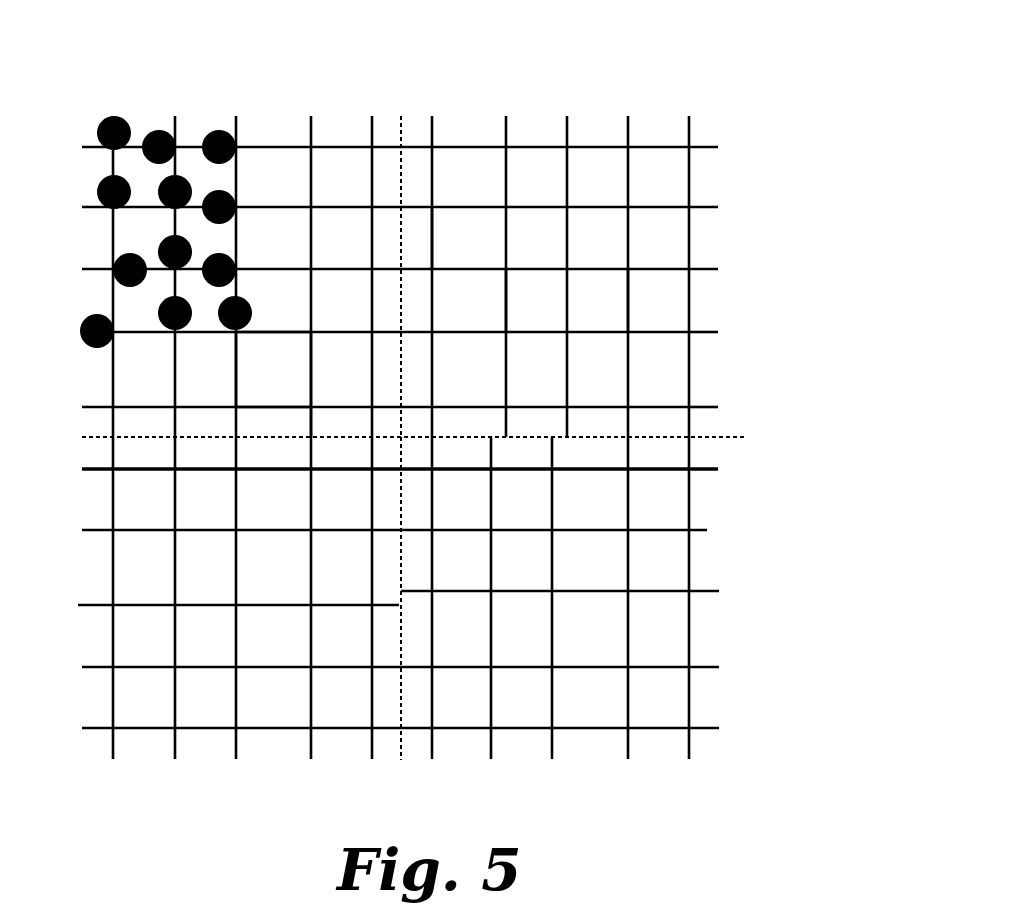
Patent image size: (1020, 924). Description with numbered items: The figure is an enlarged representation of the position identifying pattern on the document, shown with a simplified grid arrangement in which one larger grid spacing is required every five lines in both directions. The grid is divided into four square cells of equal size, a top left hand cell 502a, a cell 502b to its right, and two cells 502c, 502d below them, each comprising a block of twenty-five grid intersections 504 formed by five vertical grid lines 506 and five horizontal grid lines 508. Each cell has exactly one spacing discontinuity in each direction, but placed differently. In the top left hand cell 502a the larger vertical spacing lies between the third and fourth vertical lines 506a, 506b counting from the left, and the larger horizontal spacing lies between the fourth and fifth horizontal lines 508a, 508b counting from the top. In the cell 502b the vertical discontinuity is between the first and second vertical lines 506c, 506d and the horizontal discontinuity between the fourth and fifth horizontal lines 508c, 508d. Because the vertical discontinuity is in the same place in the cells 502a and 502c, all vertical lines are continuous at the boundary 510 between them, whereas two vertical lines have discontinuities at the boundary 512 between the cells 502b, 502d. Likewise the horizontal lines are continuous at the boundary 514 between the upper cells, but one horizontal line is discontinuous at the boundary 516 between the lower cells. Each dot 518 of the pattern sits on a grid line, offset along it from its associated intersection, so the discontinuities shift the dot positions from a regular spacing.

The top left hand cell 502a is at (254, 123).
The cell 502b is at (650, 116).
The cell 502c is at (204, 763).
The cell 502d is at (606, 766).
The grid intersections 504 is at (628, 207).
The vertical grid lines 506 is at (628, 312).
The third vertical line 506a is at (237, 392).
The fourth vertical line 506b is at (312, 400).
The first vertical line 506c is at (433, 260).
The second vertical line 506d is at (503, 285).
The horizontal grid lines 508 is at (667, 530).
The fourth horizontal line 508a is at (268, 330).
The fifth horizontal line 508b is at (278, 408).
The fourth horizontal line 508c is at (702, 332).
The fifth horizontal line 508d is at (700, 407).
The boundary 510 is at (103, 437).
The boundary 512 is at (670, 437).
The boundary 514 is at (403, 181).
The boundary 516 is at (399, 707).
The dot 518 is at (125, 120).